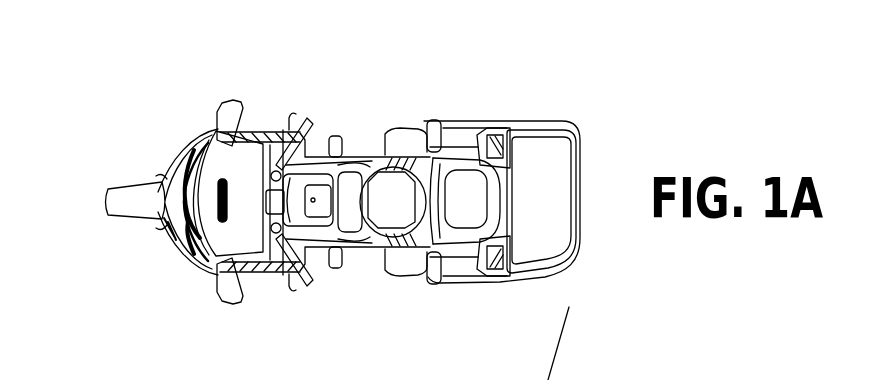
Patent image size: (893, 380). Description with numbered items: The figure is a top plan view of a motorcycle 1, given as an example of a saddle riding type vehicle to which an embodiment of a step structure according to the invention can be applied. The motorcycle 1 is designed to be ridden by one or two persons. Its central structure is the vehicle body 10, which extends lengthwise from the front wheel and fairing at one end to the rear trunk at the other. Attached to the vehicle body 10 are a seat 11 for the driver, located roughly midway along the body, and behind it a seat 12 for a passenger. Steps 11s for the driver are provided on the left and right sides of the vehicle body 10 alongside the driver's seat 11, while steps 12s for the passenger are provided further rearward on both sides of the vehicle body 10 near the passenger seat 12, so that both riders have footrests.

The motorcycle 1 is at (134, 108).
The vehicle body 10 is at (361, 162).
The seat for a driver 11 is at (390, 200).
The steps for the driver 11s is at (333, 135).
The seat for a passenger 12 is at (467, 196).
The steps for the passenger 12s is at (405, 130).